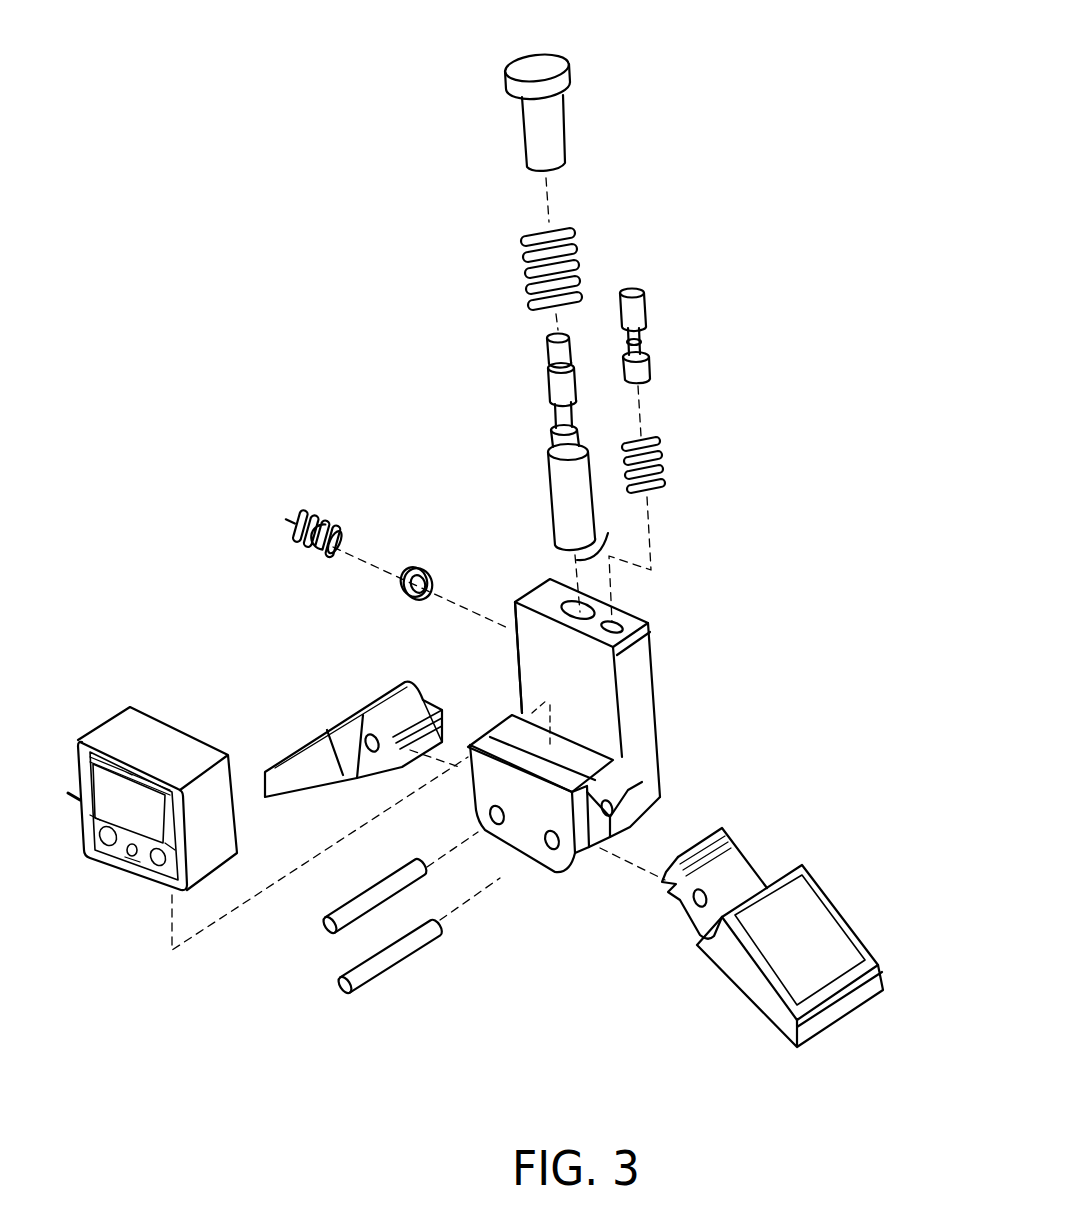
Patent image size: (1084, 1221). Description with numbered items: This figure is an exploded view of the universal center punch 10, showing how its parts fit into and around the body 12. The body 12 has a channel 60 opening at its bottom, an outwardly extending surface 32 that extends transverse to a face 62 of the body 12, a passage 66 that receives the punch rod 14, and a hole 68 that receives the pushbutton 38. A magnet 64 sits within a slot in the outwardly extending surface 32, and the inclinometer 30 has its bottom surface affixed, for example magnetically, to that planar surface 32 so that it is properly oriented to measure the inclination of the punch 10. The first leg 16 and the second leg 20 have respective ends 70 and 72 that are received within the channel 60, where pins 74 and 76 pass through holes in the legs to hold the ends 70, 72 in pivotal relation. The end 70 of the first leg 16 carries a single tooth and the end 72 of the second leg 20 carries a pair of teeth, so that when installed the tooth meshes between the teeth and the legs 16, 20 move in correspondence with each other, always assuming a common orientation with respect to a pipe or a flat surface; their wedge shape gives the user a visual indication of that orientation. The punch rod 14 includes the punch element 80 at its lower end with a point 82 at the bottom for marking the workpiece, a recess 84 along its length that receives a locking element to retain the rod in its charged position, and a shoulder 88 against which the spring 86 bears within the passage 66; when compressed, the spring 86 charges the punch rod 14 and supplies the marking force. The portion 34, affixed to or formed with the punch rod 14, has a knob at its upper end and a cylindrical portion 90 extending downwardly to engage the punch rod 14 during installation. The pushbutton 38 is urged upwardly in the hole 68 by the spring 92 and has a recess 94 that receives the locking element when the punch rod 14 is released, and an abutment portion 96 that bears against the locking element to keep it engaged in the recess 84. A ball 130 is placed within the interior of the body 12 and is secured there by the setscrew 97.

The universal center punch 10 is at (824, 404).
The body 12 is at (585, 737).
The punch rod 14 is at (550, 390).
The first leg 16 is at (358, 717).
The second leg 20 is at (772, 910).
The inclinometer 30 is at (157, 730).
The outwardly extending surface 32 is at (467, 745).
The portion 34 is at (570, 86).
The pushbutton 38 is at (640, 310).
The channel 60 is at (597, 837).
The face 62 is at (584, 680).
The magnet 64 is at (610, 770).
The passage 66 is at (573, 610).
The hole 68 is at (632, 612).
The end of first leg 70 is at (430, 690).
The end of second leg 72 is at (712, 832).
The pin 74 is at (332, 928).
The pin 76 is at (340, 982).
The punch element 80 is at (548, 502).
The point 82 is at (608, 533).
The recess 84 is at (550, 425).
The spring 86 is at (562, 250).
The shoulder 88 is at (583, 443).
The cylindrical portion 90 is at (533, 143).
The spring 92 is at (657, 462).
The recess 94 is at (640, 342).
The abutment portion 96 is at (650, 368).
The setscrew 97 is at (317, 518).
The ball 130 is at (410, 558).